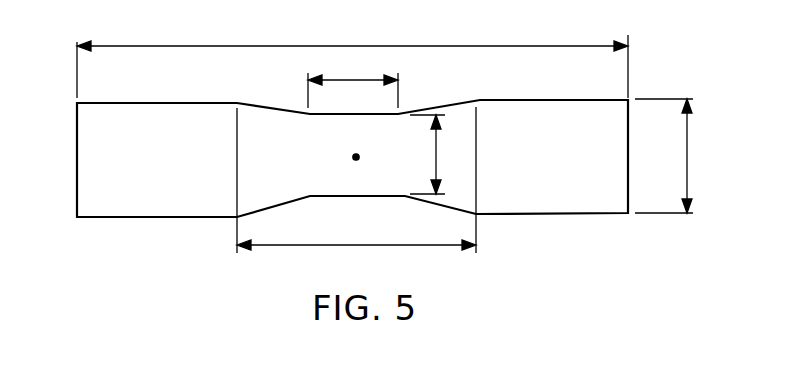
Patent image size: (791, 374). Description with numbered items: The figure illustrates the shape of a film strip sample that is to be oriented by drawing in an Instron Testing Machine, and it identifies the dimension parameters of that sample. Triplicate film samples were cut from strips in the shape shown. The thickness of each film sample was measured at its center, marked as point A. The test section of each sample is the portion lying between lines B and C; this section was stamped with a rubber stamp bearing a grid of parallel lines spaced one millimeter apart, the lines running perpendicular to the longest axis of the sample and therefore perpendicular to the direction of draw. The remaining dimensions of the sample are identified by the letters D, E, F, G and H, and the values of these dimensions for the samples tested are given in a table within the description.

The center point A is at (342, 161).
The test section boundary line B is at (232, 141).
The test section boundary line C is at (486, 138).
The sample dimension D is at (356, 46).
The sample dimension E is at (687, 143).
The sample dimension F is at (278, 248).
The sample dimension G is at (365, 80).
The sample dimension H is at (436, 142).